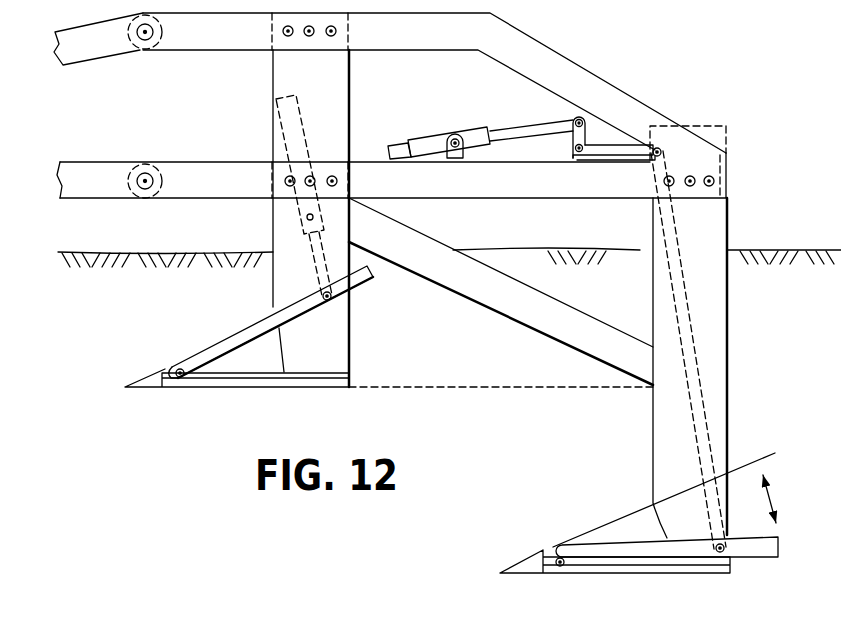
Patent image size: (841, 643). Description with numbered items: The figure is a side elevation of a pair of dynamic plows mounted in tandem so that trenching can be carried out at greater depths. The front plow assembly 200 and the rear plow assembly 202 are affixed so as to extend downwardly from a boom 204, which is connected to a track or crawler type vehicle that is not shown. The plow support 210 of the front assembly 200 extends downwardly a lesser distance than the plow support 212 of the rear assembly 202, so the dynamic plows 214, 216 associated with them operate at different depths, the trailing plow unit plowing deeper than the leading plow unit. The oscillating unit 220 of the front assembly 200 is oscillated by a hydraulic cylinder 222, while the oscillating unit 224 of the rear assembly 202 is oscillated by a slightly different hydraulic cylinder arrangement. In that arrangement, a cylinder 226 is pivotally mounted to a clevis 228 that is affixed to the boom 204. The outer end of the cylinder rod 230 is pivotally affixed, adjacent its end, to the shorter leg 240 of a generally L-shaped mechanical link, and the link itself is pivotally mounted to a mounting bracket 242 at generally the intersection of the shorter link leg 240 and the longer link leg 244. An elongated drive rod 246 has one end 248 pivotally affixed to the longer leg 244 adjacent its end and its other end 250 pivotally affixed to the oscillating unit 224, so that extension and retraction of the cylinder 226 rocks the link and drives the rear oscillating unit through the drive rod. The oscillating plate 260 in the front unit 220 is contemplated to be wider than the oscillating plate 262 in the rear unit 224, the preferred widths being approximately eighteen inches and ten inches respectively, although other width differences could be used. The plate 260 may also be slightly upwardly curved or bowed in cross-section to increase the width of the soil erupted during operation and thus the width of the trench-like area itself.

The front plow assembly 200 is at (272, 267).
The rear plow assembly 202 is at (735, 403).
The boom 204 is at (452, 53).
The plow support 210 is at (340, 232).
The plow support 212 is at (713, 323).
The dynamic plow 214 is at (233, 332).
The dynamic plow 216 is at (630, 507).
The oscillating unit 220 is at (246, 377).
The hydraulic cylinder 222 is at (297, 214).
The oscillating unit 224 is at (632, 548).
The cylinder 226 is at (468, 133).
The clevis 228 is at (462, 152).
The cylinder rod 230 is at (545, 105).
The shorter link leg 240 is at (573, 138).
The mounting bracket 242 is at (583, 158).
The longer link leg 244 is at (612, 148).
The elongated drive rod 246 is at (678, 245).
The drive rod end 248 is at (662, 147).
The drive rod end 250 is at (725, 555).
The oscillating plate 260 is at (197, 353).
The oscillating plate 262 is at (607, 545).